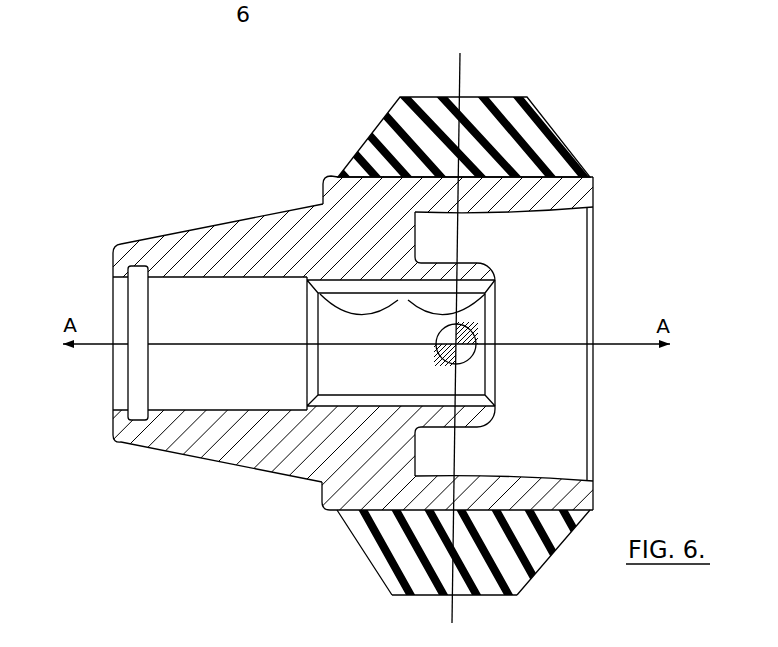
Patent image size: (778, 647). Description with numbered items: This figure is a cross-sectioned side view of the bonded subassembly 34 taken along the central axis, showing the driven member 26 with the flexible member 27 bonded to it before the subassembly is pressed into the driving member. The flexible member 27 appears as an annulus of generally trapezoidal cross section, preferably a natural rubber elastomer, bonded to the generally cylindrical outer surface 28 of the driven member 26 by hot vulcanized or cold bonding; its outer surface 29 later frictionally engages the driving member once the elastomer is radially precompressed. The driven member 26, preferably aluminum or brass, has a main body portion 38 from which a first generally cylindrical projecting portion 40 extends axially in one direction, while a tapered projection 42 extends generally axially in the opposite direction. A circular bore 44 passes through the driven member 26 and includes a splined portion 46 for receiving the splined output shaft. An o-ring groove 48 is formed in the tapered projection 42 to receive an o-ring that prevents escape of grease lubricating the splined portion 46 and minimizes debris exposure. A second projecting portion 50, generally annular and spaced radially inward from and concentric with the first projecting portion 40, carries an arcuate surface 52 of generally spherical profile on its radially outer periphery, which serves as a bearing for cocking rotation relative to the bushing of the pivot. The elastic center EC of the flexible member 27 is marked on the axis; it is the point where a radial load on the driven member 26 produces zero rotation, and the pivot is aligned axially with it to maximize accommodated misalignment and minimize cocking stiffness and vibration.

The driven member 26 is at (389, 359).
The flexible member 27 is at (563, 107).
The outer surface 28 is at (464, 571).
The outer surface 29 is at (464, 598).
The bonded subassembly 34 is at (500, 64).
The main body portion 38 is at (367, 232).
The first generally cylindrical projecting portion 40 is at (563, 198).
The tapered projection 42 is at (203, 240).
The circular bore 44 is at (196, 278).
The splined portion 46 is at (401, 302).
The o-ring groove 48 is at (143, 419).
The second projecting portion 50 is at (480, 418).
The arcuate surface 52 is at (465, 430).
The Elastic Center EC is at (473, 332).